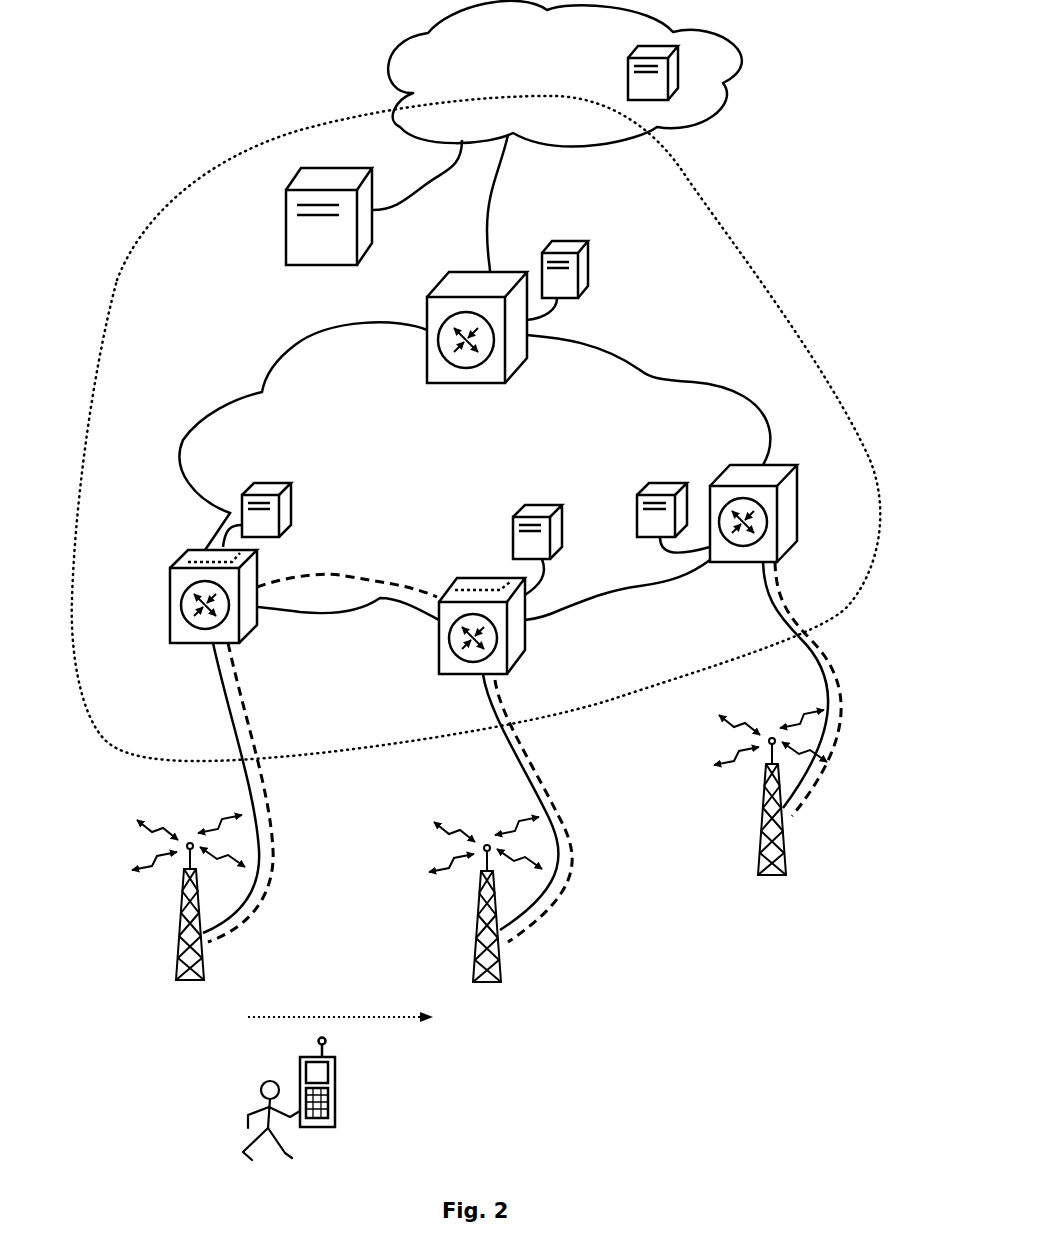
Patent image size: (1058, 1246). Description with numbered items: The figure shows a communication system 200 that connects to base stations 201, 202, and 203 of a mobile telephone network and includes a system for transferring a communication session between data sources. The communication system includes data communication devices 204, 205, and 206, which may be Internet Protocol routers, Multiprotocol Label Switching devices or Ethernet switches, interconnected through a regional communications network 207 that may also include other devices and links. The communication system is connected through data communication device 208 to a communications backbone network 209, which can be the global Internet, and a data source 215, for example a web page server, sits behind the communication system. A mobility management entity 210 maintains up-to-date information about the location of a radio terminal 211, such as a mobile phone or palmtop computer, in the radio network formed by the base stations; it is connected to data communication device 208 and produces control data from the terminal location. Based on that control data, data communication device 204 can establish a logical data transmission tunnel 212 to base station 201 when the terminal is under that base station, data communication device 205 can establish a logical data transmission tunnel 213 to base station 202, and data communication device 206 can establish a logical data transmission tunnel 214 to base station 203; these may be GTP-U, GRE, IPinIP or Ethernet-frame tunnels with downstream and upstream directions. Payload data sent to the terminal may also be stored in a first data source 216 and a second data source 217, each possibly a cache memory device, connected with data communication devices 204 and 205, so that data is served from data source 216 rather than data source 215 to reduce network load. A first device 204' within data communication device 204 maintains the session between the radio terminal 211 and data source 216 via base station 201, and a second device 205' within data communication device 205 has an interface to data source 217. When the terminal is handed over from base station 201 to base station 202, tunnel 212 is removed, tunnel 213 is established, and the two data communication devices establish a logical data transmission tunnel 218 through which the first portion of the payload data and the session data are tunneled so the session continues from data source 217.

The communication system 200 is at (725, 212).
The base station 201 is at (200, 965).
The base station 202 is at (500, 958).
The base station 203 is at (760, 868).
The data communication device 204 is at (189, 623).
The first device 204' is at (181, 536).
The data communication device 205 is at (436, 626).
The second device 205' is at (482, 551).
The data communication device 206 is at (777, 463).
The regional communications network 207 is at (613, 350).
The data communication device 208 is at (427, 300).
The communications backbone network 209 is at (383, 67).
The mobility management entity 210 is at (285, 218).
The radio terminal 211 is at (367, 1057).
The logical data transmission tunnel 212 is at (267, 797).
The logical data transmission tunnel 213 is at (540, 765).
The logical data transmission tunnel 214 is at (818, 793).
The data source 215 is at (628, 77).
The first data source 216 is at (267, 480).
The second data source 217 is at (537, 503).
The logical data transmission tunnel 218 is at (343, 577).